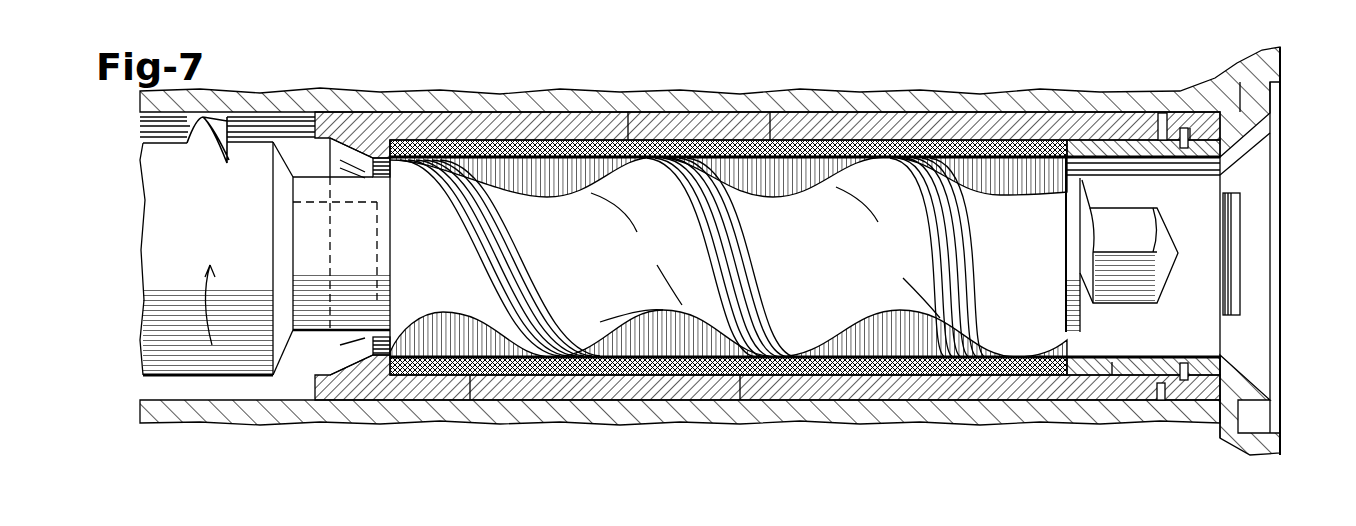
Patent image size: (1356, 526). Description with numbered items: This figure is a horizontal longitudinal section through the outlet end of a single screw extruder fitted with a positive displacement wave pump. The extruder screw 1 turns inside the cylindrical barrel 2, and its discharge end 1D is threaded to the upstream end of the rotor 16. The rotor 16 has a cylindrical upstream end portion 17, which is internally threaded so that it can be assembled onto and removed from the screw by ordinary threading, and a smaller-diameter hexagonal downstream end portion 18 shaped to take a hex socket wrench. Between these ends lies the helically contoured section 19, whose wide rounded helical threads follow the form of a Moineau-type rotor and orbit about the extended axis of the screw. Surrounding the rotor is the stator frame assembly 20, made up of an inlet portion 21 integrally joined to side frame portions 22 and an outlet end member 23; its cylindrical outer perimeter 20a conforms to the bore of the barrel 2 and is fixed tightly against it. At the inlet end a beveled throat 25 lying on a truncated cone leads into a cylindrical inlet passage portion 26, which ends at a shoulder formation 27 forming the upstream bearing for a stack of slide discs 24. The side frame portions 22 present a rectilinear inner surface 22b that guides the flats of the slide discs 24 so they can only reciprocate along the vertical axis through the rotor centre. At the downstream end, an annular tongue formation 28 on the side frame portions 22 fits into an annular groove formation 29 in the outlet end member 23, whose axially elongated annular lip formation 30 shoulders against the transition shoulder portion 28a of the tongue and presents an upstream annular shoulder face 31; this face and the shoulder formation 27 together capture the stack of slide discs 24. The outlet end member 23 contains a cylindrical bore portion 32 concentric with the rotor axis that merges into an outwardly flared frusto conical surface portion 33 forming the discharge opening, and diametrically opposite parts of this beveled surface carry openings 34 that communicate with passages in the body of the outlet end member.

The extruder screw 1 is at (156, 286).
The discharge end of the extruder screw 1D is at (292, 228).
The cylindrical barrel 2 is at (912, 96).
The rotor 16 is at (555, 257).
The cylindrical upstream end portion 17 is at (337, 243).
The downstream end portion 18 is at (1140, 210).
The helically contoured section 19 is at (612, 322).
The stator frame assembly 20 is at (537, 111).
The cylindrical outer perimeter 20a is at (632, 112).
The inlet portion 21 is at (365, 398).
The side frame portion 22 is at (262, 118).
The rectilinear inner surface 22b is at (780, 160).
The outlet end member 23 is at (1226, 396).
The slide discs 24 is at (490, 142).
The beveled throat 25 is at (343, 140).
The cylindrical inlet passage portion 26 is at (378, 180).
The shoulder formation 27 is at (406, 162).
The annular tongue formation 28 is at (1170, 133).
The transition shoulder portion 28a is at (1133, 377).
The annular groove formation 29 is at (1198, 128).
The annular lip formation 30 is at (1112, 372).
The upstream annular shoulder face 31 is at (1084, 140).
The cylindrical bore portion 32 is at (1208, 327).
The frusto conical surface portion 33 is at (1262, 130).
The openings 34 is at (1236, 226).